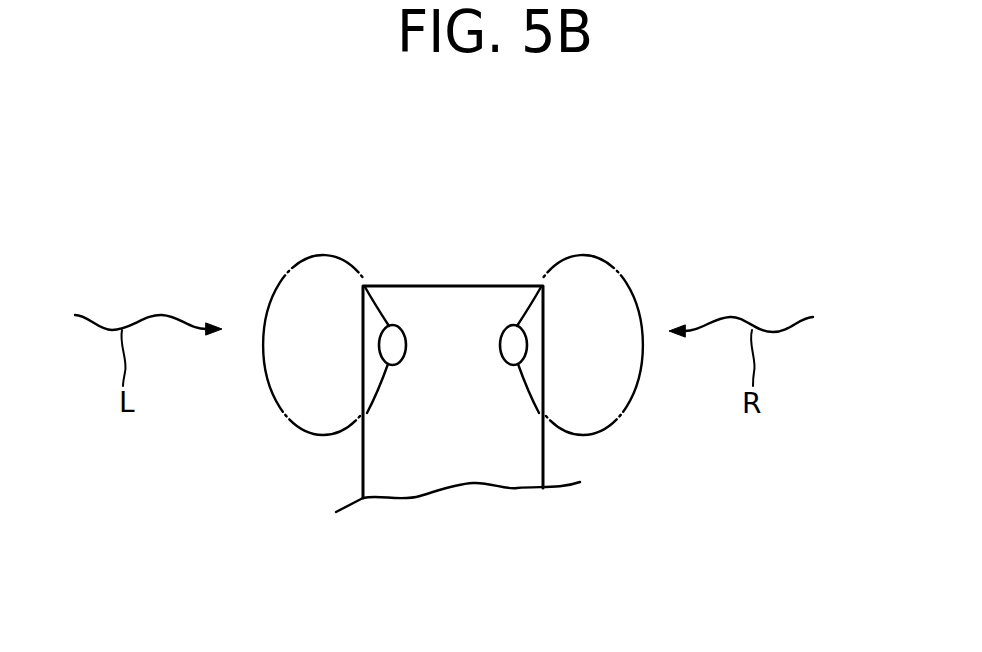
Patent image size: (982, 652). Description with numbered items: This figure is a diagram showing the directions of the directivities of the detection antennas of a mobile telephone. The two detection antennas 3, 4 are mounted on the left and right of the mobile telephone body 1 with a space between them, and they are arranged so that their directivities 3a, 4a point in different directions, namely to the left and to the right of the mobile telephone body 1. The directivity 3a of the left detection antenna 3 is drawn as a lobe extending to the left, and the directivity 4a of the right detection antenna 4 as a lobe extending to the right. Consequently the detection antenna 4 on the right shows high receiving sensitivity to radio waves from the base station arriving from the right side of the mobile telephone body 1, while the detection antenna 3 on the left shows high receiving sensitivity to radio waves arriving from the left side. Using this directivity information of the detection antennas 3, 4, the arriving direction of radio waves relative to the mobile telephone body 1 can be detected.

The mobile telephone body 1 is at (530, 452).
The detection antenna 3 is at (394, 324).
The directivity 3a is at (321, 256).
The detection antenna 4 is at (512, 324).
The directivity 4a is at (590, 256).